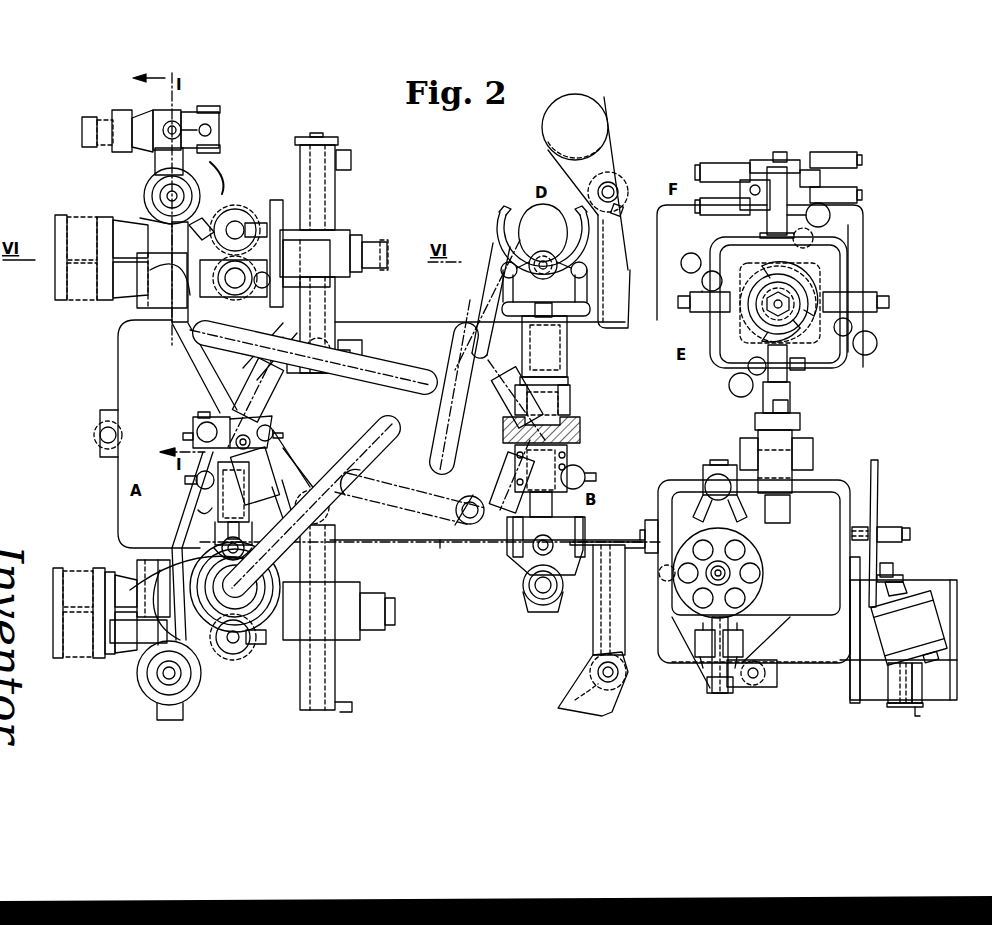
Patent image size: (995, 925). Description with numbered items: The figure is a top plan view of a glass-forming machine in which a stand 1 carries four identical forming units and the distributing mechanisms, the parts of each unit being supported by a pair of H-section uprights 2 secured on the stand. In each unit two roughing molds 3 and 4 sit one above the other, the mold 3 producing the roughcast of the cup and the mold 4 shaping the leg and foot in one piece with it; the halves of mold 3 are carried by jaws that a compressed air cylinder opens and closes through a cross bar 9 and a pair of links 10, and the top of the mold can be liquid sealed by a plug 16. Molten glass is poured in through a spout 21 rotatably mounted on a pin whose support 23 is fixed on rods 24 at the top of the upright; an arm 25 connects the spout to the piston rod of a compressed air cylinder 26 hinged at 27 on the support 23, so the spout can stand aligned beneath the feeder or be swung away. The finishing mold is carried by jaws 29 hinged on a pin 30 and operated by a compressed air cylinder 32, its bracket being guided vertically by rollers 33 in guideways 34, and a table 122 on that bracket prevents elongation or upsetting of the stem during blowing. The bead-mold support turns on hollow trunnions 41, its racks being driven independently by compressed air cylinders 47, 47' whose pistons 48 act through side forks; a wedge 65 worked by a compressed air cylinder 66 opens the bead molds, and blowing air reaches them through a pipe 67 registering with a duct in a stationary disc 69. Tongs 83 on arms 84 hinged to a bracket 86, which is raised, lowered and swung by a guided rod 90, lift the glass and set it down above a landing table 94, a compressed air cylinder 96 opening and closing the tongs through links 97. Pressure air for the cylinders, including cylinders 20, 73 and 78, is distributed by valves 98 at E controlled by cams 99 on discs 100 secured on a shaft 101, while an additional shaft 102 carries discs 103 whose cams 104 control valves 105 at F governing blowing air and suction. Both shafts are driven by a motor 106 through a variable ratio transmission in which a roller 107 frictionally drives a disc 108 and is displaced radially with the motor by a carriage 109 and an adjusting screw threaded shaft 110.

The stand 1 is at (445, 555).
The uprights 2 is at (580, 428).
The roughing mold 3 is at (262, 597).
The roughing mold 4 is at (205, 592).
The cross bar 9 is at (203, 512).
The links 10 is at (268, 494).
The plug 16 is at (246, 548).
The compressed air cylinder 20 is at (233, 503).
The spout 21 is at (337, 444).
The support 23 is at (285, 465).
The rods 24 is at (273, 430).
The arm 25 is at (462, 338).
The compressed air cylinder 26 is at (510, 470).
The hinge 27 is at (262, 422).
The jaws 29 is at (503, 222).
The pin 30 is at (545, 284).
The compressed air cylinder 32 is at (560, 345).
The rollers 33 is at (563, 392).
The guideways 34 is at (562, 380).
The hollow trunnion 41 is at (200, 262).
The compressed air cylinder 47 is at (89, 238).
The compressed air cylinder 47' is at (88, 281).
The pistons 48 is at (82, 225).
The wedge 65 is at (198, 222).
The compressed air cylinder 66 is at (152, 222).
The pipe 67 is at (252, 250).
The stationary disc 69 is at (277, 210).
The compressed air cylinder 73 is at (328, 305).
The compressed air cylinder 78 is at (375, 253).
The tongs 83 is at (211, 131).
The arms 84 is at (219, 110).
The bracket 86 is at (160, 160).
The rod 90 is at (168, 195).
The landing table 94 is at (598, 118).
The compressed air cylinder 96 is at (100, 118).
The links 97 is at (170, 125).
The valves 98 is at (775, 214).
The cams 99 is at (800, 275).
The discs 100 is at (800, 332).
The shaft 101 is at (770, 306).
The additional shaft 102 is at (784, 152).
The discs 103 is at (763, 162).
The cams 104 is at (792, 200).
The valves 105 is at (718, 208).
The motor 106 is at (910, 632).
The roller 107 is at (903, 570).
The disc 108 is at (877, 505).
The carriage 109 is at (914, 690).
The adjusting screw threaded shaft 110 is at (888, 683).
The table 122 is at (543, 233).